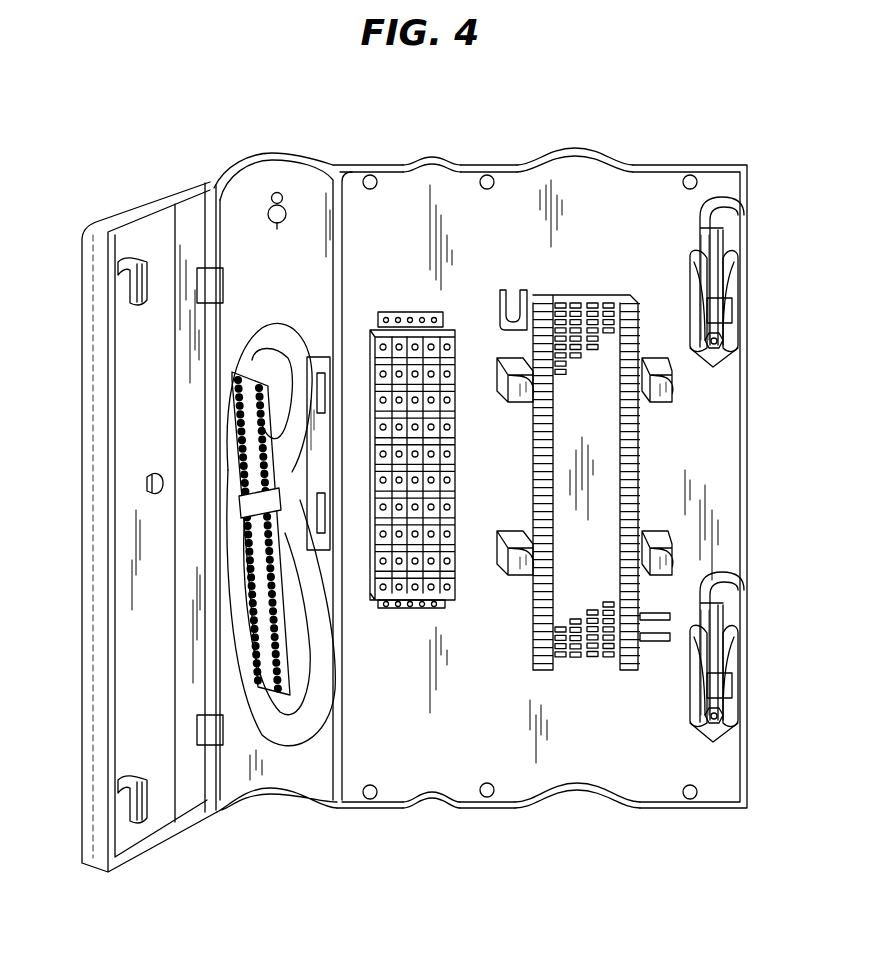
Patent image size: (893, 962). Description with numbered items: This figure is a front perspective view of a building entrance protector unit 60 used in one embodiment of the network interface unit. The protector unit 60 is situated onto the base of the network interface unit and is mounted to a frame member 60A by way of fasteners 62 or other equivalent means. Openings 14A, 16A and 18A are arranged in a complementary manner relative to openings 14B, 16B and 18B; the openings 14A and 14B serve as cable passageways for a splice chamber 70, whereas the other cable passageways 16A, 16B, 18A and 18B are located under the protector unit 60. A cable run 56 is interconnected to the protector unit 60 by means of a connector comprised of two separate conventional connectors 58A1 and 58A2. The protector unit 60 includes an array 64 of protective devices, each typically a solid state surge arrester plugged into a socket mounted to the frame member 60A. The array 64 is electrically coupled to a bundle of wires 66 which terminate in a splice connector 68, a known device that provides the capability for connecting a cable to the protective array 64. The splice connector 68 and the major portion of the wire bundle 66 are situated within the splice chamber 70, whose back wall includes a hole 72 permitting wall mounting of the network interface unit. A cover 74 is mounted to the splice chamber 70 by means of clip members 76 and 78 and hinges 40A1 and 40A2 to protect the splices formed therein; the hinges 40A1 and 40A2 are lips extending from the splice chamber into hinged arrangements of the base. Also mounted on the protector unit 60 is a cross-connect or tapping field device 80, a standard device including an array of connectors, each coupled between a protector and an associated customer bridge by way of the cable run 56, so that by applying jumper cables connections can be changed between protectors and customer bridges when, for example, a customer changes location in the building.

The building entrance protector unit 60 is at (722, 116).
The frame member 60A is at (752, 436).
The opening 14A is at (300, 160).
The opening 16A is at (432, 157).
The opening 18A is at (580, 148).
The opening 14B is at (274, 797).
The opening 16B is at (430, 800).
The opening 18B is at (580, 795).
The fasteners 62 is at (370, 190).
The cover 74 is at (82, 438).
The splice chamber 70 is at (244, 186).
The clip member 76 is at (122, 282).
The clip member 78 is at (122, 798).
The hinge 40A1 is at (212, 732).
The hinge 40A2 is at (212, 285).
The hole 72 is at (276, 229).
The bundle of wires 66 is at (294, 347).
The splice connector 68 is at (282, 523).
The array of protective devices 64 is at (410, 312).
The cross-connect or tapping field device 80 is at (530, 497).
The cable run 56 is at (727, 199).
The connector 58A1 is at (697, 305).
The connector 58A2 is at (697, 668).